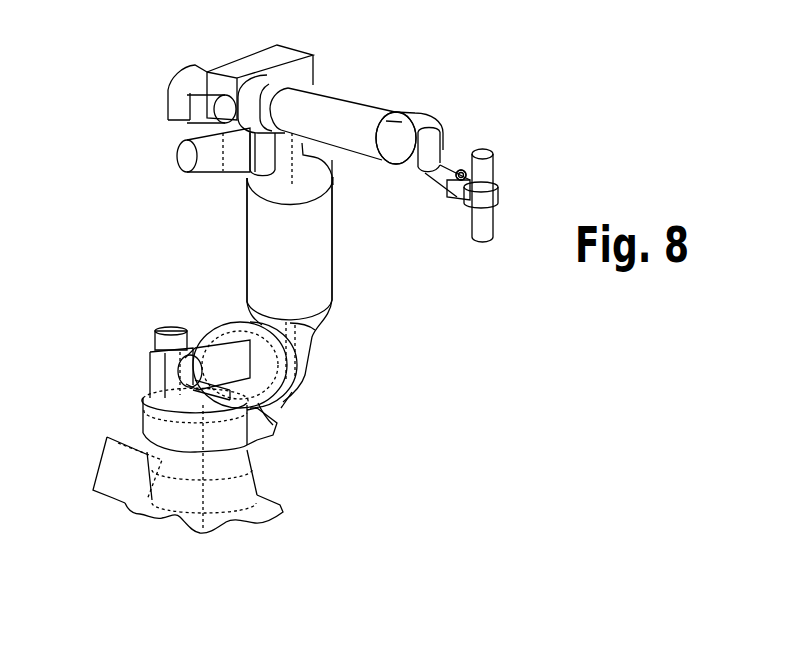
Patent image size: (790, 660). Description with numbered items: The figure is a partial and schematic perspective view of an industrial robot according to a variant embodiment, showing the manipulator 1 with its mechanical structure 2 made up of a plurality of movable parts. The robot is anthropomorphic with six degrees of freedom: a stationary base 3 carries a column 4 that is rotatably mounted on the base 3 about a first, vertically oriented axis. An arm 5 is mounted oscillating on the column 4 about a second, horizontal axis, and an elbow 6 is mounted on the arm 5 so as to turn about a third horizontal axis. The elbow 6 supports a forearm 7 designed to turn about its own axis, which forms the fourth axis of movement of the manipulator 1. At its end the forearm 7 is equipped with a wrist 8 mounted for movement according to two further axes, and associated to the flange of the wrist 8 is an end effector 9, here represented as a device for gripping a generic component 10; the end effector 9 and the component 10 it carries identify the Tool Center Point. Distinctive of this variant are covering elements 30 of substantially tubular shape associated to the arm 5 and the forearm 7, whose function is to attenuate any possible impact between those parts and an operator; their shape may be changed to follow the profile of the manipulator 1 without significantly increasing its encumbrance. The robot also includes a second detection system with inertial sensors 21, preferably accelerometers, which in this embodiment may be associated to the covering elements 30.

The manipulator 1 is at (162, 245).
The mechanical structure 2 is at (313, 370).
The stationary base 3 is at (177, 492).
The column 4 is at (263, 425).
The arm 5 is at (320, 324).
The elbow 6 is at (233, 55).
The forearm 7 is at (398, 147).
The wrist 8 is at (427, 167).
The end effector 9 is at (445, 206).
The component 10 is at (485, 220).
The inertial sensor 21 is at (461, 169).
The covering element 30 is at (351, 87).